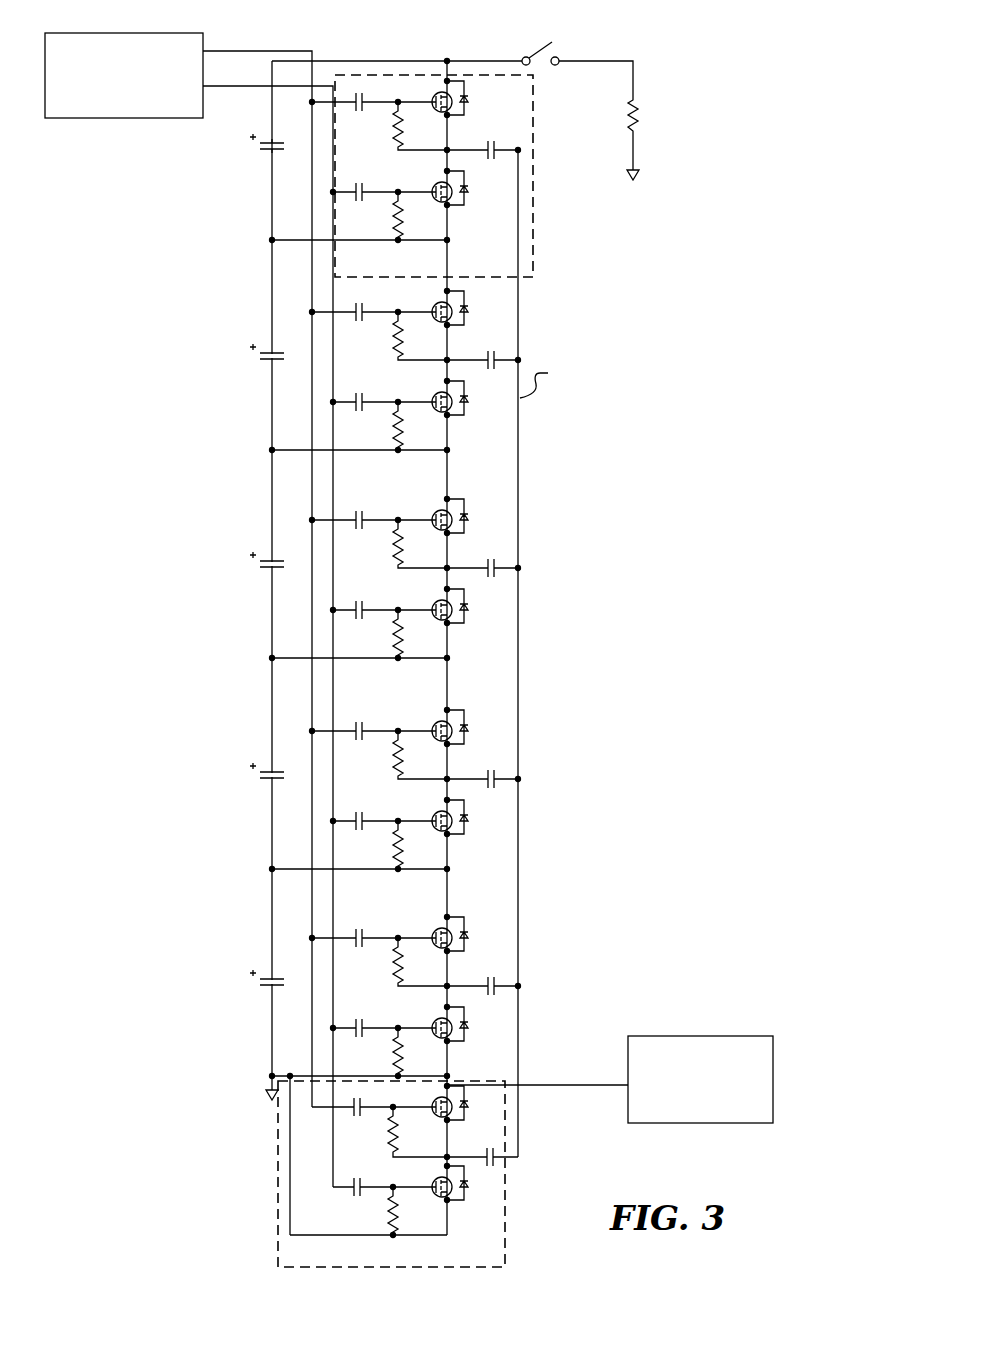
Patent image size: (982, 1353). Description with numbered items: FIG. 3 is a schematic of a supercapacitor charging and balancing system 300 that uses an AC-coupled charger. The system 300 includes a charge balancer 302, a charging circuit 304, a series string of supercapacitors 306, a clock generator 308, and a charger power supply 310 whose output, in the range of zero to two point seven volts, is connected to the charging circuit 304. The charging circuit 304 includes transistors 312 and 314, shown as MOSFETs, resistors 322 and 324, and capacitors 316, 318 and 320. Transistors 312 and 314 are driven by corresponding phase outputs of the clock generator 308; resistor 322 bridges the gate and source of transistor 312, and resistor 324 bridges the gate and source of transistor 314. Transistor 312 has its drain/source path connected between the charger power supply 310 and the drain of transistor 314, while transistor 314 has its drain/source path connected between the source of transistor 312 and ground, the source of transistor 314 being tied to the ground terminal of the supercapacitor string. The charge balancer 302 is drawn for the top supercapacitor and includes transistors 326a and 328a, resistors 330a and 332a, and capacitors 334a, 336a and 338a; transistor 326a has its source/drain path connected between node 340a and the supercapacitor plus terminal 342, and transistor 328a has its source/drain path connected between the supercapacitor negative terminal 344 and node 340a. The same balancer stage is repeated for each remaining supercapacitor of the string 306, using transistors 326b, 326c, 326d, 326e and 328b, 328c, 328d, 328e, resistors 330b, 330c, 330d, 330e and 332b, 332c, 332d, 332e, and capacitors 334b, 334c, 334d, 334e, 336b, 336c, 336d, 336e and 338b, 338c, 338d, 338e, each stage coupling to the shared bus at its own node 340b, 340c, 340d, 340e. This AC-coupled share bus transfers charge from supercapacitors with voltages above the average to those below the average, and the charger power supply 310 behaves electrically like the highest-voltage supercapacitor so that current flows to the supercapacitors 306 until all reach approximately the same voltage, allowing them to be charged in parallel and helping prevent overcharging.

The supercapacitor charging and balancing system 300 is at (771, 120).
The charge balancer 302 is at (533, 253).
The charging circuit 304 is at (278, 1222).
The series of supercapacitors 306 is at (257, 155).
The clock generator 308 is at (107, 118).
The charger power supply 310 is at (688, 1036).
The transistor 312 is at (445, 1106).
The transistor 314 is at (445, 1188).
The capacitor 316 is at (354, 1117).
The capacitor 318 is at (364, 1199).
The capacitor 320 is at (482, 1146).
The resistor 322 is at (406, 1133).
The resistor 324 is at (368, 1212).
The transistor 326a is at (433, 98).
The transistor 326b is at (433, 308).
The transistor 326c is at (433, 516).
The transistor 326d is at (433, 727).
The transistor 326e is at (433, 934).
The transistor 328a is at (425, 186).
The transistor 328b is at (425, 396).
The transistor 328c is at (425, 604).
The transistor 328d is at (425, 815).
The transistor 328e is at (425, 1022).
The resistor 330a is at (421, 127).
The resistor 330b is at (421, 337).
The resistor 330c is at (421, 545).
The resistor 330d is at (421, 756).
The resistor 330e is at (421, 963).
The resistor 332a is at (416, 217).
The resistor 332b is at (416, 427).
The resistor 332c is at (416, 635).
The resistor 332d is at (416, 846).
The resistor 332e is at (416, 1053).
The capacitor 334a is at (355, 112).
The capacitor 334b is at (355, 322).
The capacitor 334c is at (355, 530).
The capacitor 334d is at (355, 741).
The capacitor 334e is at (355, 948).
The capacitor 336a is at (366, 204).
The capacitor 336b is at (366, 414).
The capacitor 336c is at (366, 622).
The capacitor 336d is at (366, 833).
The capacitor 336e is at (366, 1040).
The capacitor 338a is at (480, 187).
The capacitor 338b is at (480, 397).
The capacitor 338c is at (479, 605).
The capacitor 338d is at (480, 816).
The capacitor 338e is at (480, 1023).
The node 340a is at (484, 146).
The node 340b is at (484, 356).
The node 340c is at (484, 564).
The node 340d is at (484, 775).
The node 340e is at (484, 982).
The supercapacitor plus terminal 342 is at (360, 60).
The supercapacitor negative terminal 344 is at (272, 241).